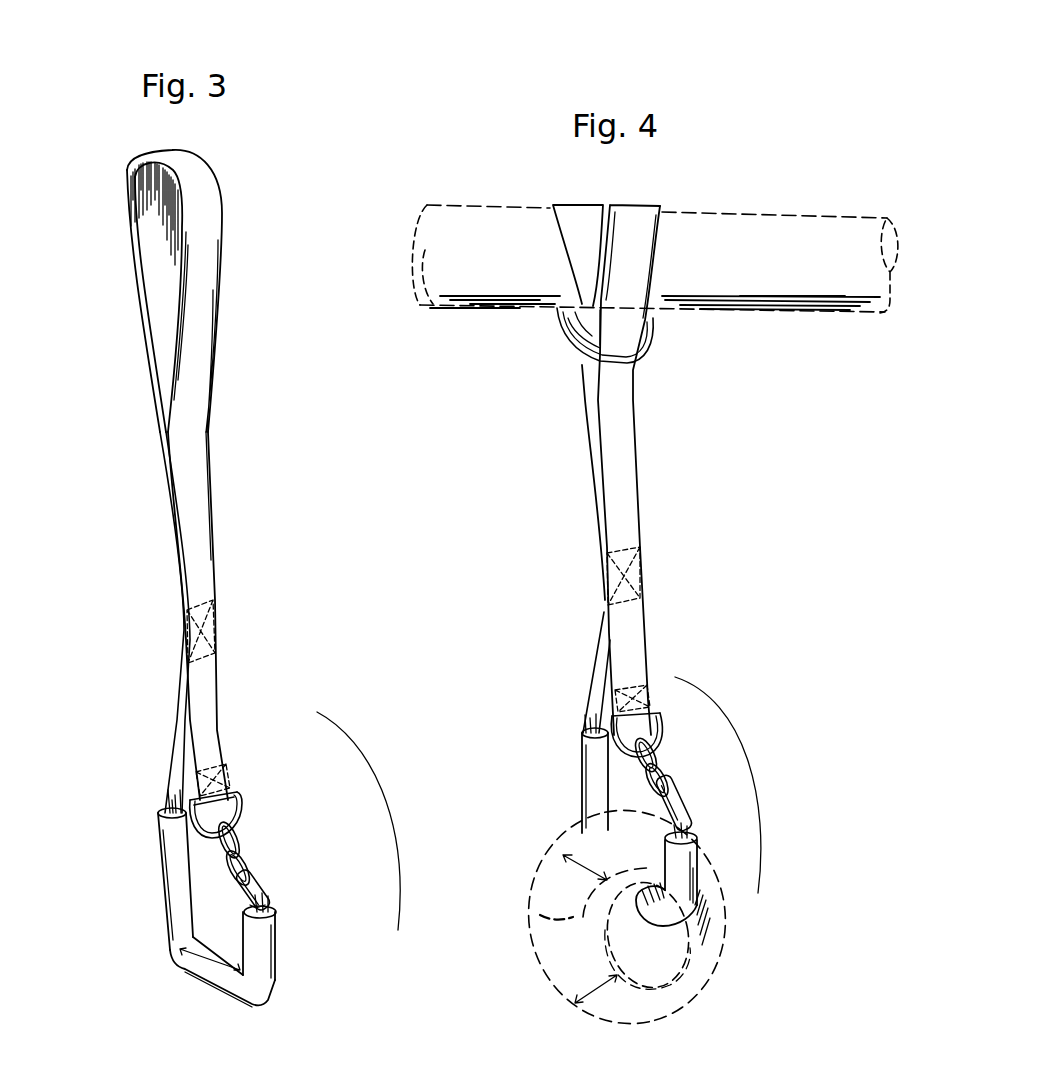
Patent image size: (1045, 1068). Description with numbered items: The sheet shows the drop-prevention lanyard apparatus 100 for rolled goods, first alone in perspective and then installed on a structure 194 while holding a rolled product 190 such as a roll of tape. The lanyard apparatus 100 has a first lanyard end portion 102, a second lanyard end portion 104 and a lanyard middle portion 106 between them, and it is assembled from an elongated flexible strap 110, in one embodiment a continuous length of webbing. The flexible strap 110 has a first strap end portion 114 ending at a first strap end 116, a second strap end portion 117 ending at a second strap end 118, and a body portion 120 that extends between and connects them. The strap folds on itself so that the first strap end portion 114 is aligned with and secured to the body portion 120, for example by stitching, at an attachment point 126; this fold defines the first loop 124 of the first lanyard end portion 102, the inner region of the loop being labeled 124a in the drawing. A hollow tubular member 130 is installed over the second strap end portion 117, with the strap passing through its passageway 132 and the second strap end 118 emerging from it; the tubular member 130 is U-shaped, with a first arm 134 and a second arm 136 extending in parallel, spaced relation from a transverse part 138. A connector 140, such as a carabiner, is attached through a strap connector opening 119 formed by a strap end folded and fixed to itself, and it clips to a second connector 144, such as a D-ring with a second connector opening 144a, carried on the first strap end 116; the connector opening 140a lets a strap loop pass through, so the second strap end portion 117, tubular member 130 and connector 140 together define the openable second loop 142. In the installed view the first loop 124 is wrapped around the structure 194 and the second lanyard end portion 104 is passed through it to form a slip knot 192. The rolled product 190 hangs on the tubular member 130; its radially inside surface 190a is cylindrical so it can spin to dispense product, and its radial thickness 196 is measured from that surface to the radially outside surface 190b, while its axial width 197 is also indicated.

In FIG. 3, the lanyard apparatus 100 is at (83, 135).
In FIG. 4, the lanyard apparatus 100 is at (640, 510).
In FIG. 4, the first lanyard end portion 102 is at (462, 178).
In FIG. 4, the second lanyard end portion 104 is at (521, 751).
In FIG. 3, the lanyard middle portion 106 is at (145, 567).
In FIG. 4, the lanyard middle portion 106 is at (665, 522).
In FIG. 3, the flexible strap 110 is at (172, 550).
In FIG. 3, the first strap end portion 114 is at (203, 708).
In FIG. 4, the first strap end portion 114 is at (635, 667).
In FIG. 3, the first strap end 116 is at (222, 790).
In FIG. 4, the first strap end 116 is at (632, 698).
In FIG. 3, the second strap end portion 117 is at (173, 783).
In FIG. 4, the second strap end portion 117 is at (588, 702).
In FIG. 3, the second strap end 118 is at (262, 900).
In FIG. 3, the strap connector opening 119 is at (245, 907).
In FIG. 3, the body portion 120 is at (188, 425).
In FIG. 3, the first loop 124 is at (133, 285).
In FIG. 4, the first loop 124 is at (555, 560).
In FIG. 3, the loop interior 124a is at (172, 215).
In FIG. 3, the attachment point 126 is at (200, 640).
In FIG. 3, the tubular member 130 is at (160, 870).
In FIG. 3, the passageway 132 is at (160, 805).
In FIG. 4, the passageway 132 is at (595, 780).
In FIG. 3, the first arm 134 is at (265, 935).
In FIG. 4, the first arm 134 is at (673, 884).
In FIG. 3, the second arm 136 is at (176, 890).
In FIG. 3, the transverse part 138 is at (182, 965).
In FIG. 3, the connector 140 is at (240, 805).
In FIG. 4, the connector 140 is at (636, 735).
In FIG. 3, the connector opening 140a is at (228, 810).
In FIG. 3, the second loop 142 is at (390, 804).
In FIG. 4, the second loop 142 is at (745, 770).
In FIG. 3, the second connector 144 is at (225, 850).
In FIG. 4, the second connector 144 is at (662, 783).
In FIG. 3, the second connector opening 144a is at (232, 835).
In FIG. 4, the rolled product 190 is at (530, 930).
In FIG. 4, the radially inside surface 190a is at (638, 963).
In FIG. 4, the radially outside surface 190b is at (552, 972).
In FIG. 4, the slip knot 192 is at (620, 325).
In FIG. 4, the structure 194 is at (497, 279).
In FIG. 4, the radial thickness 196 is at (596, 985).
In FIG. 4, the axial width 197 is at (563, 853).